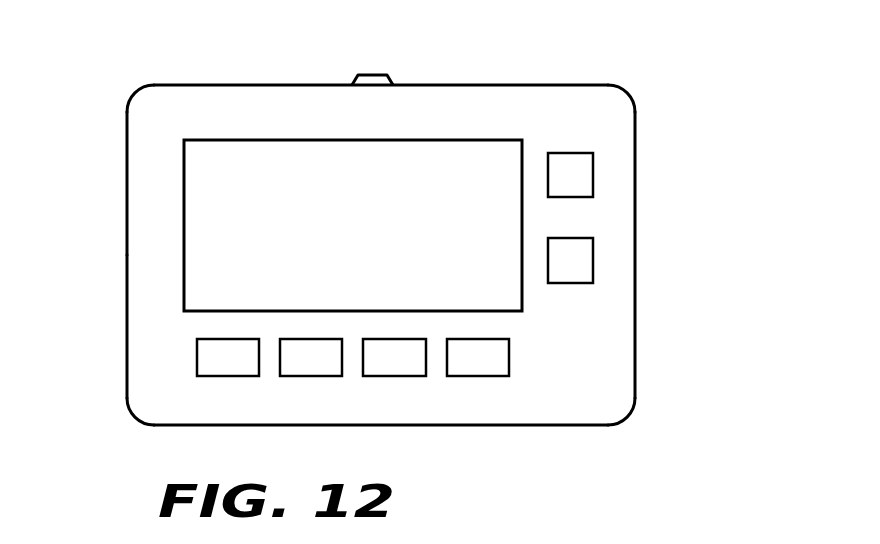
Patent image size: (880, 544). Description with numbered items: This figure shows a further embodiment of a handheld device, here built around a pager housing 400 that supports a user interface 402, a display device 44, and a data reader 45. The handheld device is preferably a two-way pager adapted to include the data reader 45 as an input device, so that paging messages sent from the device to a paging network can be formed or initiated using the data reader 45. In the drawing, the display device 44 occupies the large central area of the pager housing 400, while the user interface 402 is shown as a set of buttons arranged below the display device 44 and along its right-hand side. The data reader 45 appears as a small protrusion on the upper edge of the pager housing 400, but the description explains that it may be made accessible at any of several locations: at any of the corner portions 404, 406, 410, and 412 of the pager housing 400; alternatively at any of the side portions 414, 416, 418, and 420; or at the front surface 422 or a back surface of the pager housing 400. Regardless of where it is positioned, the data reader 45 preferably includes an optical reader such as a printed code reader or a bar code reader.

The pager housing 400 is at (388, 256).
The user interface 402 is at (583, 300).
The corner portion 404 is at (131, 96).
The corner portion 406 is at (625, 88).
The corner portion 410 is at (139, 421).
The corner portion 412 is at (633, 413).
The side portion 414 is at (283, 85).
The side portion 416 is at (636, 173).
The side portion 418 is at (401, 426).
The side portion 420 is at (126, 360).
The front surface 422 is at (141, 153).
The display device 44 is at (470, 138).
The data reader 45 is at (378, 75).